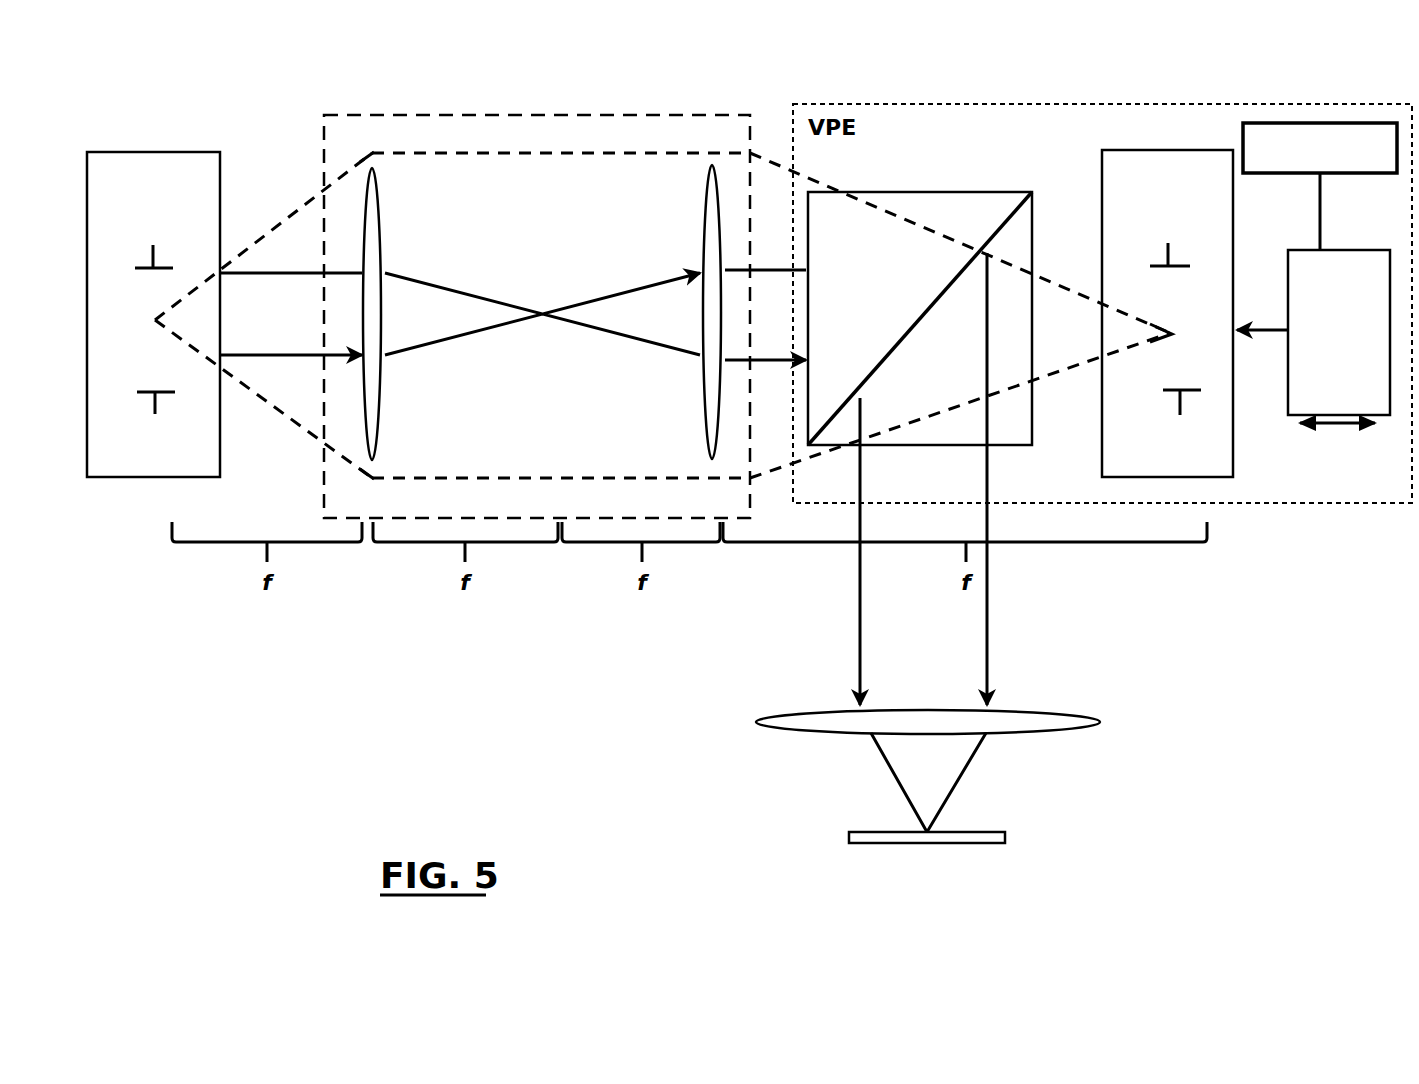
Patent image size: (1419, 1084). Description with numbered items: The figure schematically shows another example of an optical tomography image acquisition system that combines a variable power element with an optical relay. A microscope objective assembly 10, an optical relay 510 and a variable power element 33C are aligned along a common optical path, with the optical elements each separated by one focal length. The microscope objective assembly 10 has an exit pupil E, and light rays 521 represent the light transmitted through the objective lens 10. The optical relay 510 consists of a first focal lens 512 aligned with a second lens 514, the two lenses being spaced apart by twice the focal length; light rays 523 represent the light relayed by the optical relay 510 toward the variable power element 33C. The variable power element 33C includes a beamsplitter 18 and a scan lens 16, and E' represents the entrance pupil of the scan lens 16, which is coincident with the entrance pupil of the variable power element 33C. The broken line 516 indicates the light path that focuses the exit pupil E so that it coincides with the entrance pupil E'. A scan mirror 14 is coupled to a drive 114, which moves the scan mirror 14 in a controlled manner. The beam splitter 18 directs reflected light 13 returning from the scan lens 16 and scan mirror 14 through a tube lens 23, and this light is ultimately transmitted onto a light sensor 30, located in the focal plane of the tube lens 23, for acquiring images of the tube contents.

The microscope objective assembly 10 is at (141, 186).
The exit pupil E is at (118, 515).
The light rays 521 is at (322, 268).
The optical relay 510 is at (374, 522).
The first focal lens 512 is at (383, 408).
The second lens 514 is at (705, 205).
The light rays 523 is at (768, 272).
The beamsplitter 18 is at (920, 298).
The variable power element 33C is at (928, 163).
The reflected light 13 is at (997, 627).
The broken line 516 is at (789, 469).
The scan lens 16 is at (1155, 184).
The entrance pupil E' is at (1259, 521).
The drive 114 is at (1360, 162).
The scan mirror 14 is at (1327, 336).
The tube lens 23 is at (760, 718).
The light sensor 30 is at (843, 839).